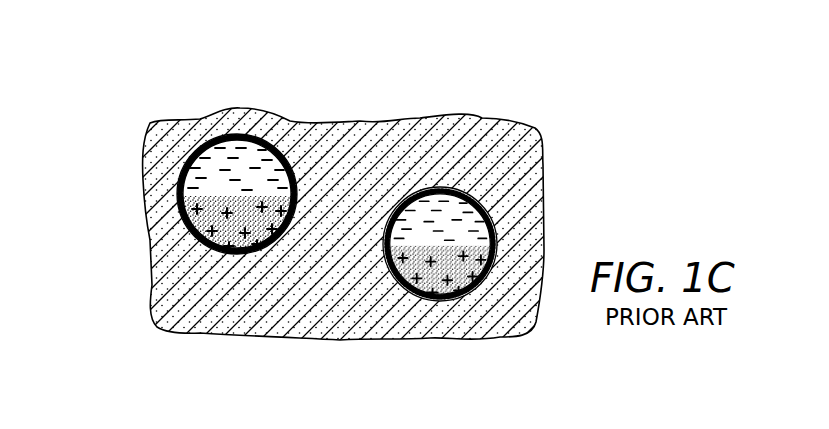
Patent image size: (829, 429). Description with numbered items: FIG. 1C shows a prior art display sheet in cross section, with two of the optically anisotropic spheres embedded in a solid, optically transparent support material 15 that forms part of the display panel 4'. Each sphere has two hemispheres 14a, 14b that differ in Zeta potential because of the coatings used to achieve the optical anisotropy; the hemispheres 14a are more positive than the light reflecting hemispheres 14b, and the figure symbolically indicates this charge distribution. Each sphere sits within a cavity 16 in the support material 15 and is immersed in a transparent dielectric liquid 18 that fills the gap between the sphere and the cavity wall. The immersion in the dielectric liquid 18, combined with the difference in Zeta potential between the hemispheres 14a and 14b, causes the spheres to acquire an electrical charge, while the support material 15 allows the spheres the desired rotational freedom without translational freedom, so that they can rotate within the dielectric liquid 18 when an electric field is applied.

The display panel 4' is at (343, 206).
The support material 15 is at (327, 128).
The cavity 16 is at (230, 257).
The dielectric liquid 18 is at (188, 242).
The hemisphere 14a is at (180, 220).
The hemisphere 14b is at (233, 155).